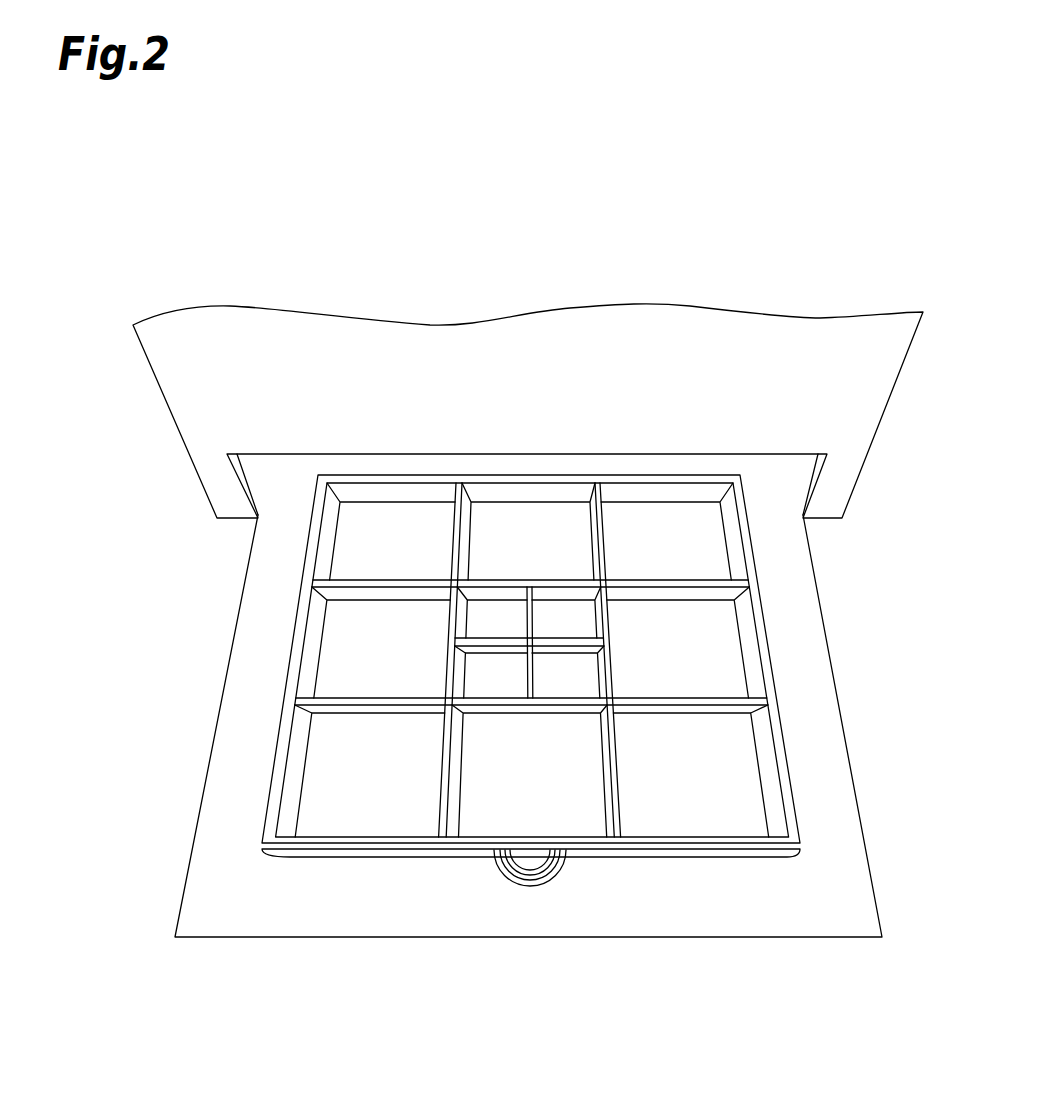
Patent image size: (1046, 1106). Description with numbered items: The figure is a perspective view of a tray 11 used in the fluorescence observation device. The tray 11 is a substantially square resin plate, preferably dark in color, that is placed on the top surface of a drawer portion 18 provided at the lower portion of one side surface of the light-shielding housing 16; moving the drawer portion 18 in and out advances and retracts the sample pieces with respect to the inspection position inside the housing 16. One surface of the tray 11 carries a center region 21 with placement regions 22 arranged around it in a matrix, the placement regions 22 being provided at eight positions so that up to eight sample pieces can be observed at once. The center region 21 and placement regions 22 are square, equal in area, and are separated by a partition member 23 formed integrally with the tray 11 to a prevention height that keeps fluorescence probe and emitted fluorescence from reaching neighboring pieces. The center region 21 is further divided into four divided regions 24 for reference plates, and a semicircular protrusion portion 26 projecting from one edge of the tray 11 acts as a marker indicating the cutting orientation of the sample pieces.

The tray 11 is at (540, 658).
The housing 16 is at (160, 390).
The drawer portion 18 is at (826, 695).
The center region 21 is at (572, 654).
The placement region 22 is at (502, 515).
The partition member 23 is at (357, 582).
The divided region 24 is at (565, 615).
The protrusion portion 26 is at (558, 878).